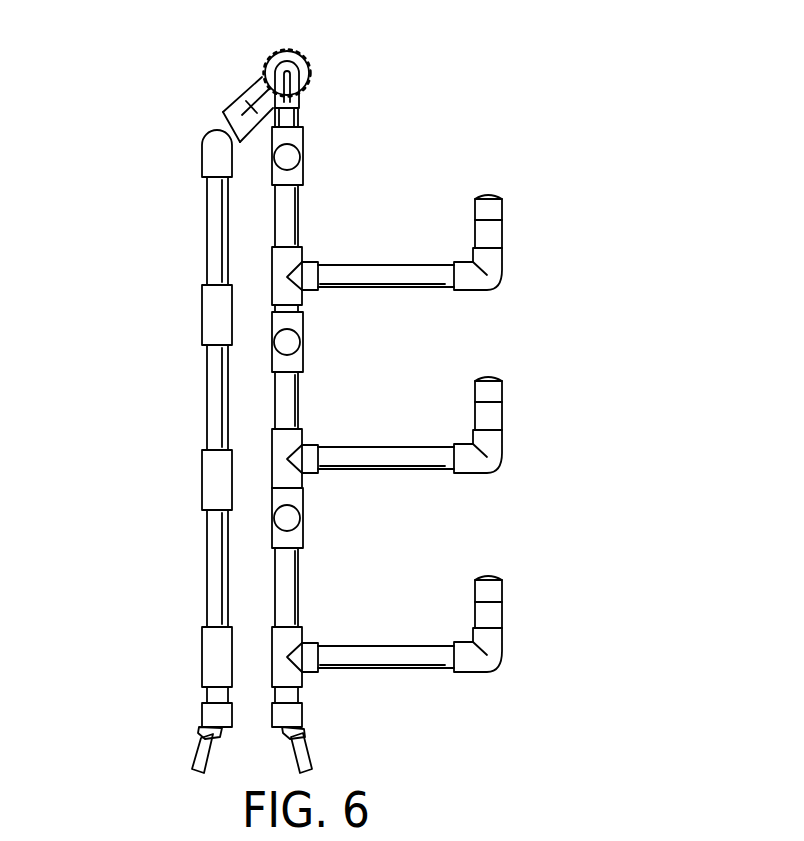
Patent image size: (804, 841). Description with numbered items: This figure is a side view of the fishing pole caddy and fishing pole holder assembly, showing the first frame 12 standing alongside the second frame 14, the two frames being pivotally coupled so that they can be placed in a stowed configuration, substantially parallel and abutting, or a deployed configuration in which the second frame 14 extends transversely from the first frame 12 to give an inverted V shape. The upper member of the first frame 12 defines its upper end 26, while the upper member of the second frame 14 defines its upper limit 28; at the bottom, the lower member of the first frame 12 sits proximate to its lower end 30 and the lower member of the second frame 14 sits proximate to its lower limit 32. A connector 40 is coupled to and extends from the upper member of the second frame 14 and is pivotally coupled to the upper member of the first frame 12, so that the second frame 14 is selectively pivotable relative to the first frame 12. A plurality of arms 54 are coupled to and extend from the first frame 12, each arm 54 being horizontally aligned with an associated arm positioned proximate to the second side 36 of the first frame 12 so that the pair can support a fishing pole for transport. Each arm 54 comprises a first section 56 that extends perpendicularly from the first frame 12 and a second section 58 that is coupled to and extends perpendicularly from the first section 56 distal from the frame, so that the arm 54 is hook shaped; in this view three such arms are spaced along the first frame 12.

The first frame 12 is at (287, 213).
The second frame 14 is at (215, 398).
The upper end 26 is at (298, 53).
The upper limit 28 is at (205, 138).
The lower end 30 is at (282, 722).
The lower limit 32 is at (200, 732).
The second side 36 is at (287, 592).
The connector 40 is at (275, 55).
The arm 54 is at (407, 645).
The first section 56 is at (392, 445).
The second section 58 is at (500, 228).